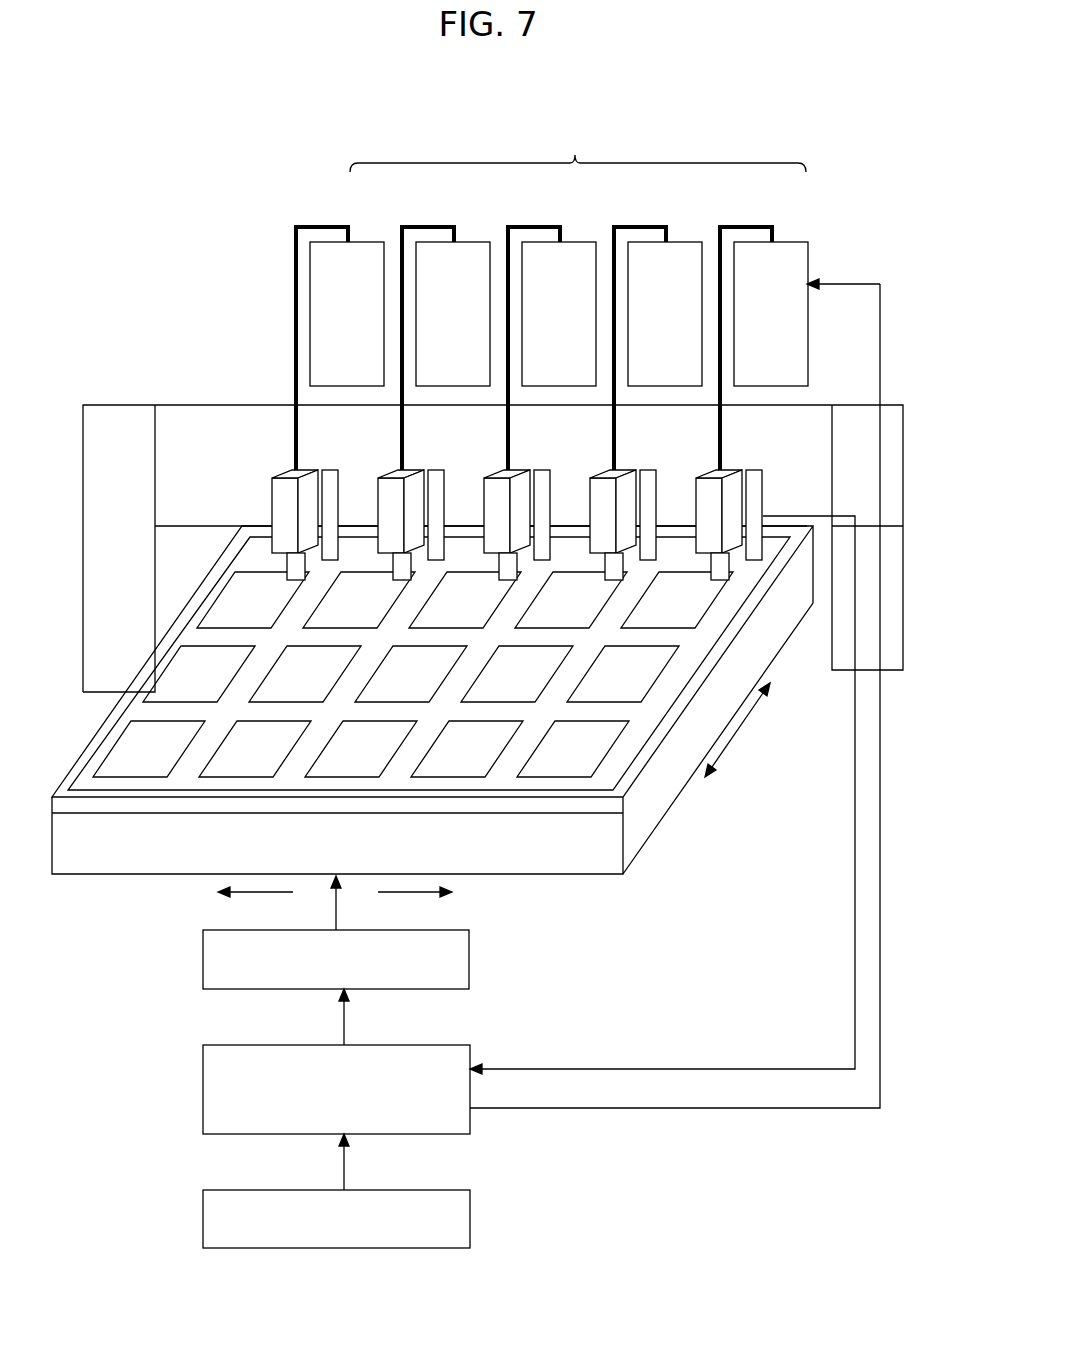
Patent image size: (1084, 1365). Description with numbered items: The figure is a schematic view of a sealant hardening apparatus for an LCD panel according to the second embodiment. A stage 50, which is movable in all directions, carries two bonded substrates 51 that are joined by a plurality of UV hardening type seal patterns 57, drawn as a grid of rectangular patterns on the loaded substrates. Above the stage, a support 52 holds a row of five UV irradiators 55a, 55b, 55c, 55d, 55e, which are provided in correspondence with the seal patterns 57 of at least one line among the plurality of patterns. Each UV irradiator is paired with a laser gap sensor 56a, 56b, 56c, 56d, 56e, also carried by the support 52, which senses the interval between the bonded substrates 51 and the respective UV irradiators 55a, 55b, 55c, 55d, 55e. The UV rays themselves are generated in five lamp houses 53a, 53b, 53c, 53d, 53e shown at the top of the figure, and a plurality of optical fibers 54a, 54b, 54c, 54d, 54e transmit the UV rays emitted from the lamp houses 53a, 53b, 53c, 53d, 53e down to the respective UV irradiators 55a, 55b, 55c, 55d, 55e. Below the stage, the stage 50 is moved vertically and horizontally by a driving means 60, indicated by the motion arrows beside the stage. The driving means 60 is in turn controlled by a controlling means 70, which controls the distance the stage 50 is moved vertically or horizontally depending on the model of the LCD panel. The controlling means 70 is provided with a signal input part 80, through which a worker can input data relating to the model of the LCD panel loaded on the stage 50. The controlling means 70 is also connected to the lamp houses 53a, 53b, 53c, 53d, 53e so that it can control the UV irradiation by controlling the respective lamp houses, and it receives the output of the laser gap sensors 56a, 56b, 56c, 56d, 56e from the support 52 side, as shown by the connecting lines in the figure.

The stage 50 is at (585, 855).
The bonded substrates 51 is at (112, 805).
The support 52 is at (903, 545).
The lamp house 53a is at (360, 246).
The lamp house 53b is at (466, 246).
The lamp house 53c is at (572, 246).
The lamp house 53d is at (678, 246).
The lamp house 53e is at (784, 246).
The optical fiber 54a is at (297, 318).
The optical fiber 54b is at (403, 318).
The optical fiber 54c is at (509, 318).
The optical fiber 54d is at (615, 318).
The optical fiber 54e is at (721, 318).
The UV irradiator 55a is at (282, 543).
The UV irradiator 55b is at (388, 543).
The UV irradiator 55c is at (494, 543).
The UV irradiator 55d is at (600, 543).
The UV irradiator 55e is at (706, 543).
The laser gap sensor 56a is at (330, 476).
The laser gap sensor 56b is at (436, 476).
The laser gap sensor 56c is at (542, 476).
The laser gap sensor 56d is at (648, 476).
The laser gap sensor 56e is at (754, 476).
The UV hardening type seal pattern 57 is at (620, 753).
The driving means 60 is at (203, 960).
The controlling means 70 is at (203, 1095).
The signal input part 80 is at (203, 1225).